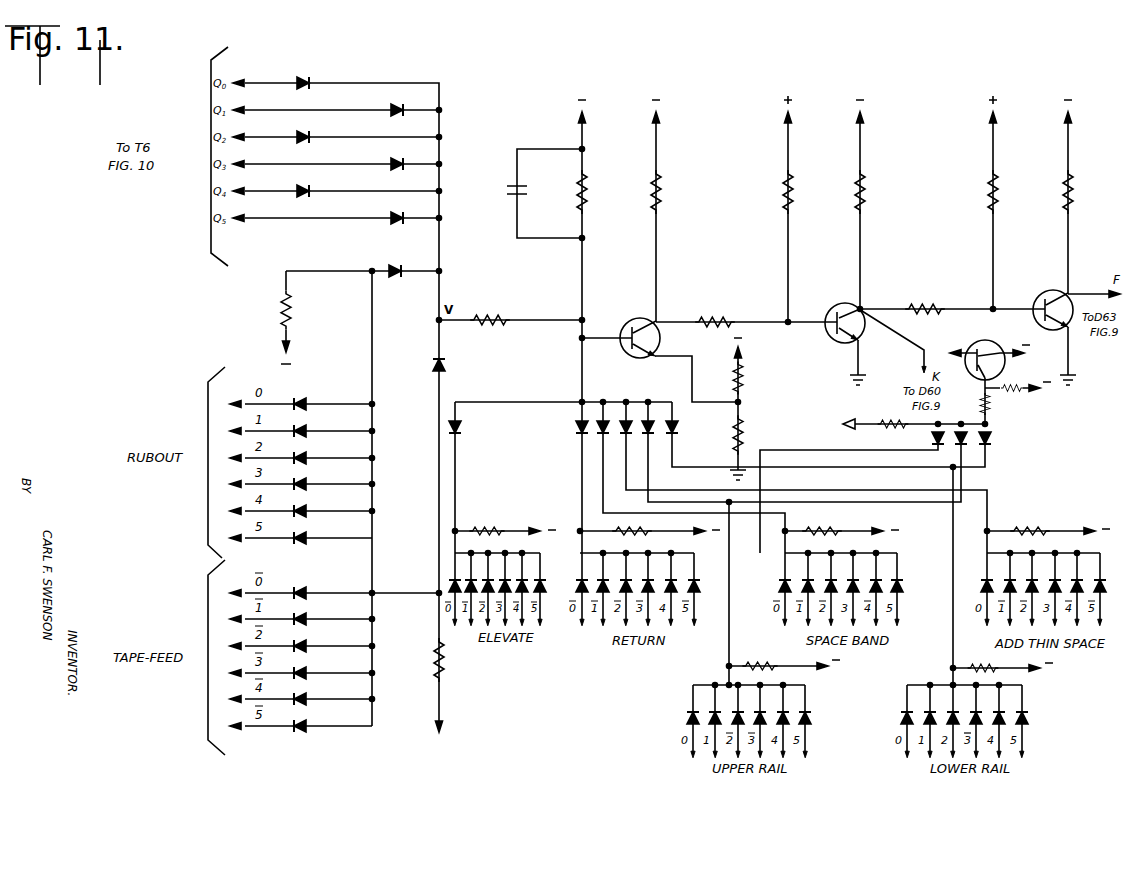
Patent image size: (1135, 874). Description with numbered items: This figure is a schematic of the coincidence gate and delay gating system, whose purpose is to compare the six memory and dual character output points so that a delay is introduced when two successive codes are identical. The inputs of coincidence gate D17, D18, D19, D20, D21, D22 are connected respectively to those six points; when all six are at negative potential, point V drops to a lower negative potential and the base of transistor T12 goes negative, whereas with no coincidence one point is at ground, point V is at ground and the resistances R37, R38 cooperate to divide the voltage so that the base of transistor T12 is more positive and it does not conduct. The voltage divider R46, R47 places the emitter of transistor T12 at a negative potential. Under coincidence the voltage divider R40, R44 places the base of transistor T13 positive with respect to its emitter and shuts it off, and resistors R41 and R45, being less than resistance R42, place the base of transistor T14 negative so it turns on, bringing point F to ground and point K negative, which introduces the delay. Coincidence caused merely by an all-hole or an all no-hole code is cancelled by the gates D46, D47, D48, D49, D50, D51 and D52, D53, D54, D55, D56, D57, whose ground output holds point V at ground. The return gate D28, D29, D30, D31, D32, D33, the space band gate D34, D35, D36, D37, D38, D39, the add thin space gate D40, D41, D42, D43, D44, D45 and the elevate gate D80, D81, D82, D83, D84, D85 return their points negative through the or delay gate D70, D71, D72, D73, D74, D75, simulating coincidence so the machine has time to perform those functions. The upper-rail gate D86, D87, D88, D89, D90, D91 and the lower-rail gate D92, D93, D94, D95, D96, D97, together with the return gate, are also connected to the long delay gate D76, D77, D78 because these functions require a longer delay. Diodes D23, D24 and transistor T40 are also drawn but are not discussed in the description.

The coincidence gate diode D17 is at (317, 78).
The coincidence gate diode D18 is at (385, 105).
The coincidence gate diode D19 is at (317, 132).
The coincidence gate diode D20 is at (385, 159).
The coincidence gate diode D21 is at (316, 186).
The coincidence gate diode D22 is at (385, 213).
The diode D23 is at (397, 281).
The diode D24 is at (453, 368).
The return gate diode D28 is at (581, 579).
The return gate diode D29 is at (603, 579).
The return gate diode D30 is at (626, 579).
The return gate diode D31 is at (648, 579).
The return gate diode D32 is at (671, 579).
The return gate diode D33 is at (694, 579).
The space band gate diode D34 is at (785, 579).
The space band gate diode D35 is at (808, 579).
The space band gate diode D36 is at (831, 579).
The space band gate diode D37 is at (853, 579).
The space band gate diode D38 is at (876, 579).
The space band gate diode D39 is at (897, 579).
The add thin space gate diode D40 is at (987, 579).
The add thin space gate diode D41 is at (1010, 579).
The add thin space gate diode D42 is at (1032, 579).
The add thin space gate diode D43 is at (1055, 579).
The add thin space gate diode D44 is at (1077, 579).
The add thin space gate diode D45 is at (1100, 579).
The all-hole gate diode D46 is at (317, 398).
The all-hole gate diode D47 is at (317, 425).
The all-hole gate diode D48 is at (317, 452).
The all-hole gate diode D49 is at (317, 478).
The all-hole gate diode D50 is at (317, 505).
The all-hole gate diode D51 is at (317, 532).
The no-hole gate diode D52 is at (317, 587).
The no-hole gate diode D53 is at (317, 613).
The no-hole gate diode D54 is at (317, 640).
The no-hole gate diode D55 is at (317, 667).
The no-hole gate diode D56 is at (317, 693).
The no-hole gate diode D57 is at (317, 720).
The or delay gate diode D70 is at (469, 429).
The or delay gate diode D71 is at (581, 420).
The or delay gate diode D72 is at (603, 420).
The or delay gate diode D73 is at (626, 420).
The or delay gate diode D74 is at (648, 420).
The or delay gate diode D75 is at (672, 420).
The long delay gate diode D76 is at (926, 438).
The long delay gate diode D77 is at (956, 433).
The long delay gate diode D78 is at (998, 439).
The elevate gate diode D80 is at (454, 579).
The elevate gate diode D81 is at (471, 579).
The elevate gate diode D82 is at (488, 579).
The elevate gate diode D83 is at (505, 579).
The elevate gate diode D84 is at (522, 579).
The elevate gate diode D85 is at (540, 579).
The upper-rail gate diode D86 is at (693, 711).
The upper-rail gate diode D87 is at (715, 711).
The upper-rail gate diode D88 is at (738, 711).
The upper-rail gate diode D89 is at (760, 711).
The upper-rail gate diode D90 is at (783, 711).
The upper-rail gate diode D91 is at (805, 711).
The lower-rail gate diode D92 is at (907, 711).
The lower-rail gate diode D93 is at (930, 711).
The lower-rail gate diode D94 is at (953, 711).
The lower-rail gate diode D95 is at (976, 711).
The lower-rail gate diode D96 is at (999, 711).
The lower-rail gate diode D97 is at (1022, 711).
The resistance R37 is at (510, 311).
The resistance R38 is at (596, 192).
The voltage divider resistor R40 is at (803, 192).
The resistor R41 is at (876, 192).
The resistance R42 is at (1008, 192).
The voltage divider resistor R44 is at (722, 311).
The resistor R45 is at (926, 300).
The voltage divider resistor R46 is at (753, 370).
The voltage divider resistor R47 is at (753, 441).
The transistor T12 is at (633, 338).
The transistor T13 is at (838, 328).
The transistor T14 is at (1033, 313).
The transistor T40 is at (987, 361).